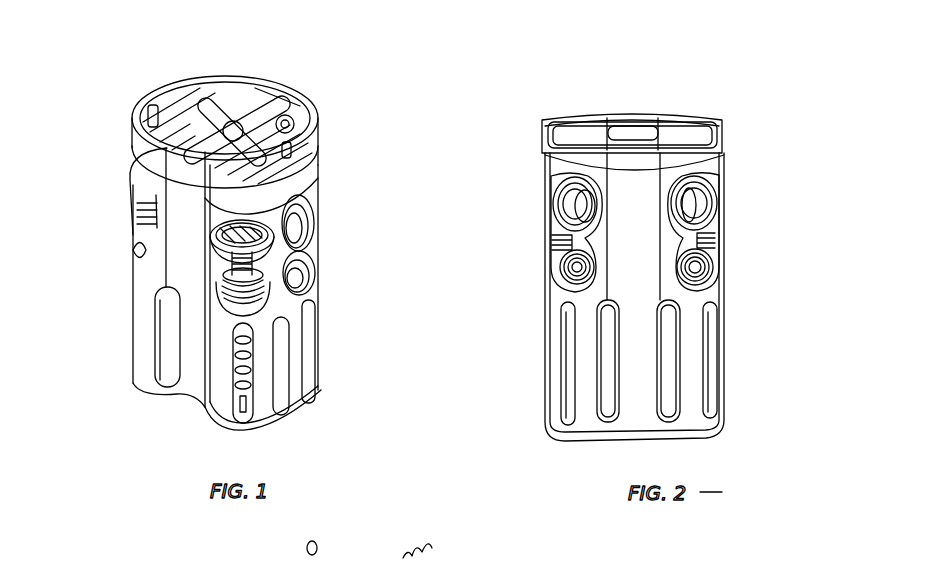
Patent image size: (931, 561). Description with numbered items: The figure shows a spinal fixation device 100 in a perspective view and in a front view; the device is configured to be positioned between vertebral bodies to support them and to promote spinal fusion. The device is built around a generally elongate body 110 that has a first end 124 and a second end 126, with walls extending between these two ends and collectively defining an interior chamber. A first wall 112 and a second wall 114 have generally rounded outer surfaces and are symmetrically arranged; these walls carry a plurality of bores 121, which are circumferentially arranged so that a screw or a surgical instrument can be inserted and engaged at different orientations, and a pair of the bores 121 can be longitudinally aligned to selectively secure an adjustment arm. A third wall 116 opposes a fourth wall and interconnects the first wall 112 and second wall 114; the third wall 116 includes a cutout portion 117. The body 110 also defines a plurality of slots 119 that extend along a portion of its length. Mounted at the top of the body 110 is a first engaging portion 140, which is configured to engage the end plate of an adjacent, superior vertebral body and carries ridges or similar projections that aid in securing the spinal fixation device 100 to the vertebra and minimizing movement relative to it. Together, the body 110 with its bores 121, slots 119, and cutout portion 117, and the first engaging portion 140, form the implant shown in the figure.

In FIG. 1, the spinal fixation device 100 is at (333, 203).
In FIG. 2, the spinal fixation device 100 is at (742, 270).
In FIG. 1, the body 110 is at (329, 339).
In FIG. 2, the body 110 is at (747, 235).
In FIG. 1, the first wall 112 is at (130, 163).
In FIG. 2, the first wall 112 is at (547, 168).
In FIG. 1, the second wall 114 is at (320, 250).
In FIG. 2, the second wall 114 is at (722, 155).
In FIG. 1, the third wall 116 is at (180, 265).
In FIG. 1, the cutout portion 117 is at (212, 164).
In FIG. 2, the slots 119 is at (567, 393).
In FIG. 1, the bores 121 is at (243, 307).
In FIG. 2, the bores 121 is at (558, 278).
In FIG. 1, the first end 124 is at (205, 395).
In FIG. 1, the second end 126 is at (302, 187).
In FIG. 1, the first engaging portion 140 is at (240, 125).